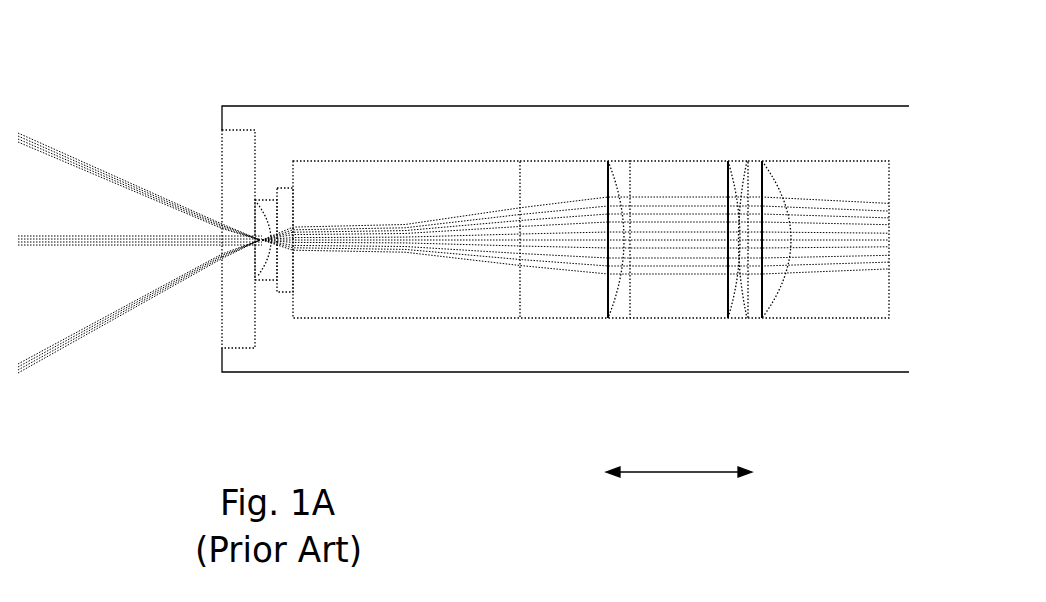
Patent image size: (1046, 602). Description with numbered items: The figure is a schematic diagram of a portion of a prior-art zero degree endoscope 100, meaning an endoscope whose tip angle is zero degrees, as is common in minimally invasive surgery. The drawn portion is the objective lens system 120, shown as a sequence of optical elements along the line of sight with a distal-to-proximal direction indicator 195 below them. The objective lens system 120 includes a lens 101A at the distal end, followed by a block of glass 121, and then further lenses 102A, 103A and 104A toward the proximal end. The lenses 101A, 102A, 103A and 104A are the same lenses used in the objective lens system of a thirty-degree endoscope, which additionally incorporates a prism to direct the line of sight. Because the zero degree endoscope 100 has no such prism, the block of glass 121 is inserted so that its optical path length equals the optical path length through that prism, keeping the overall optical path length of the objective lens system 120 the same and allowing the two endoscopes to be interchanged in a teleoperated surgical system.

The endoscope 100 is at (140, 95).
The lens 101A is at (265, 183).
The block of glass 121 is at (401, 155).
The lens 102A is at (574, 155).
The lens 103A is at (673, 148).
The lens 104A is at (748, 155).
The objective lens system 120 is at (580, 245).
The distal-proximal direction indicator 195 is at (677, 475).